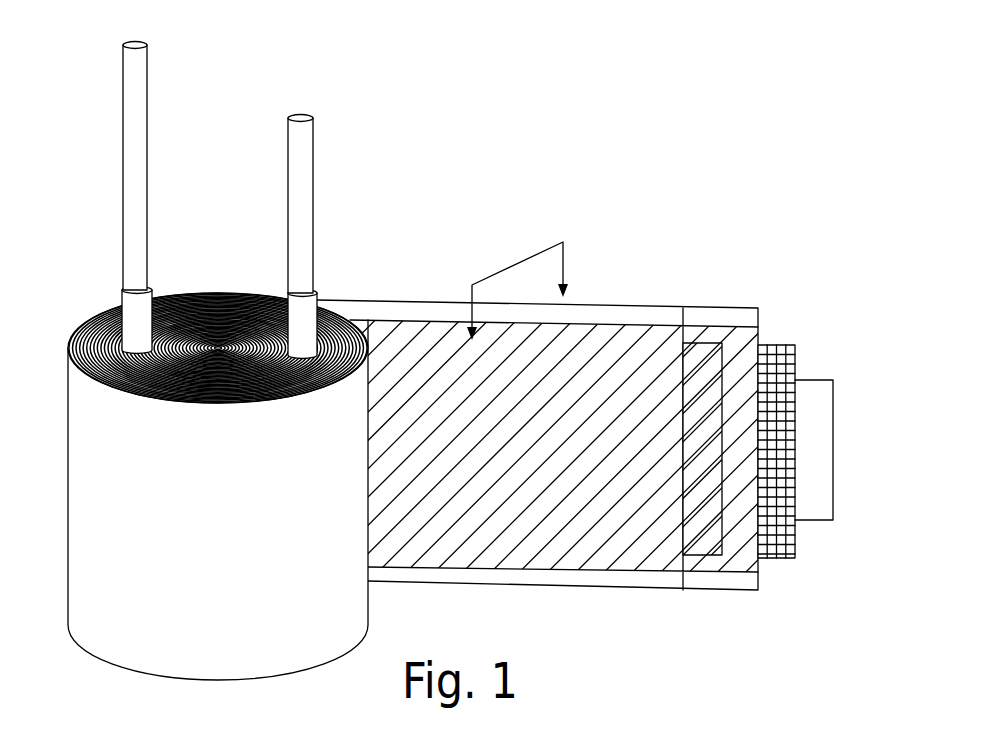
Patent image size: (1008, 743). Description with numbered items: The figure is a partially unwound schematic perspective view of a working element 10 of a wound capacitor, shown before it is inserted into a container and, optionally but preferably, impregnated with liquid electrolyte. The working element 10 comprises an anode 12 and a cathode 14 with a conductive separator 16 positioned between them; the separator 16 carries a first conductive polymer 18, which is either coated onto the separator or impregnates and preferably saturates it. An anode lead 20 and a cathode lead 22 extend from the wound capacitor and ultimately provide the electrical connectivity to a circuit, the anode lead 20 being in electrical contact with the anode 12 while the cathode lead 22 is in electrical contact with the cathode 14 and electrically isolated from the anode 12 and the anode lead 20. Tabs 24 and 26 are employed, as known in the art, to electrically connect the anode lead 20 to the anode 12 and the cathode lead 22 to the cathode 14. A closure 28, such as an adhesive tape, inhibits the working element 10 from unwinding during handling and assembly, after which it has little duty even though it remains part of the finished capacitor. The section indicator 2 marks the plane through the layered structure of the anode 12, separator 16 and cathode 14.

The section line 2- 2 is at (516, 297).
The working element 10 is at (453, 242).
The anode 12 is at (710, 552).
The cathode 14 is at (777, 525).
The conductive separator 16 is at (730, 315).
The first conductive polymer 18 is at (633, 413).
The anode lead 20 is at (135, 122).
The cathode lead 22 is at (302, 240).
The tab 24 is at (142, 325).
The tab 26 is at (302, 327).
The closure 28 is at (817, 477).